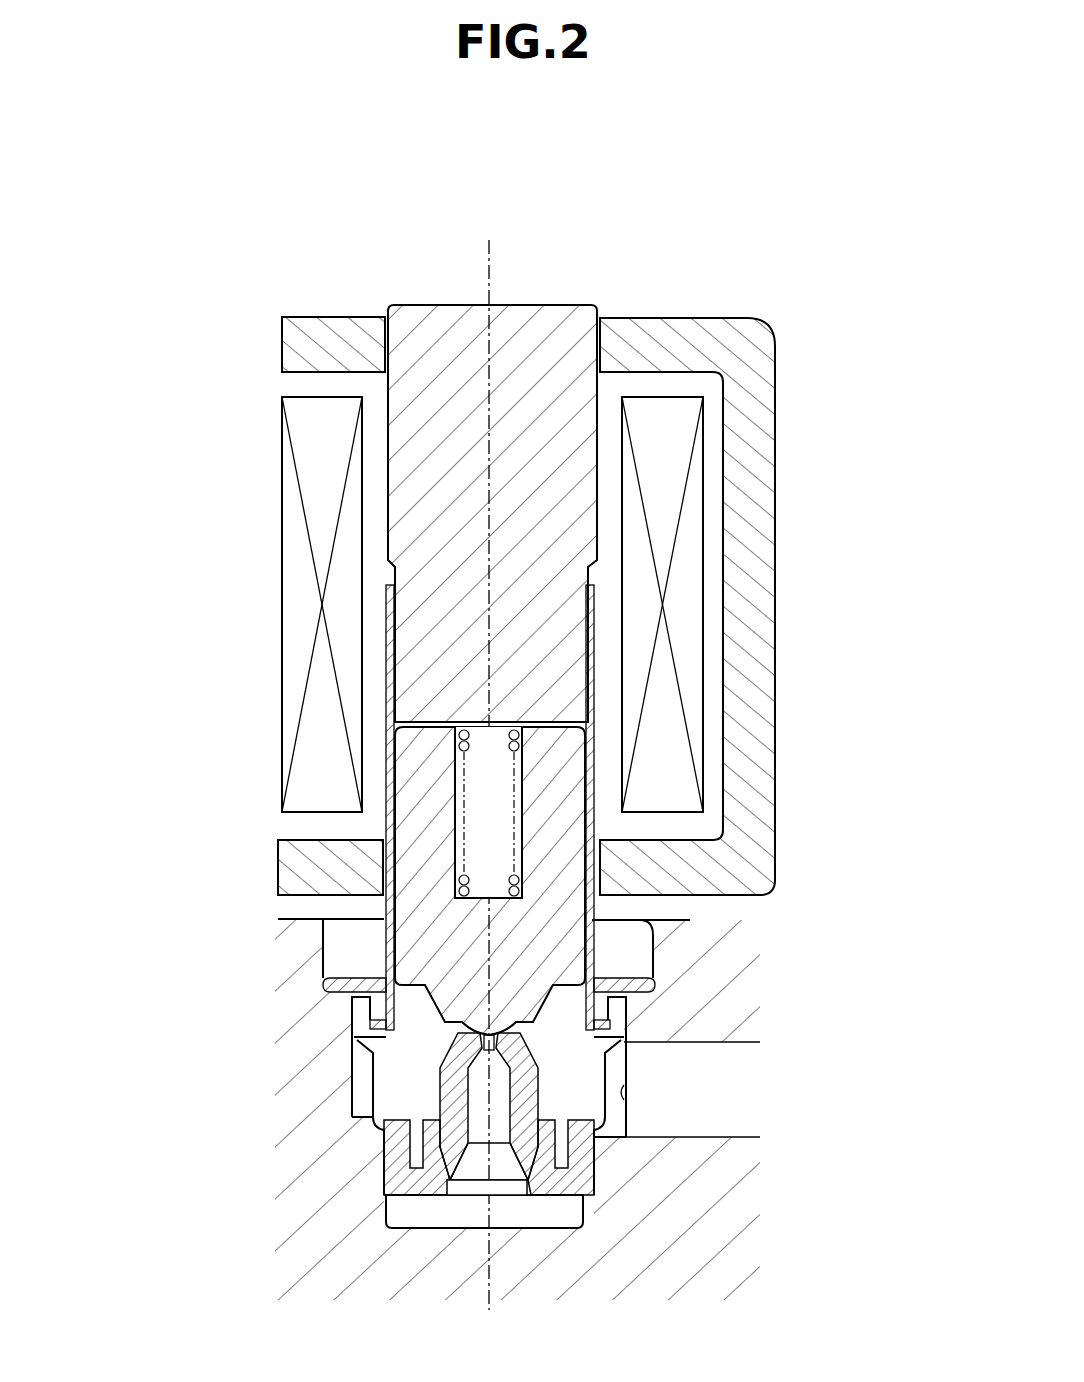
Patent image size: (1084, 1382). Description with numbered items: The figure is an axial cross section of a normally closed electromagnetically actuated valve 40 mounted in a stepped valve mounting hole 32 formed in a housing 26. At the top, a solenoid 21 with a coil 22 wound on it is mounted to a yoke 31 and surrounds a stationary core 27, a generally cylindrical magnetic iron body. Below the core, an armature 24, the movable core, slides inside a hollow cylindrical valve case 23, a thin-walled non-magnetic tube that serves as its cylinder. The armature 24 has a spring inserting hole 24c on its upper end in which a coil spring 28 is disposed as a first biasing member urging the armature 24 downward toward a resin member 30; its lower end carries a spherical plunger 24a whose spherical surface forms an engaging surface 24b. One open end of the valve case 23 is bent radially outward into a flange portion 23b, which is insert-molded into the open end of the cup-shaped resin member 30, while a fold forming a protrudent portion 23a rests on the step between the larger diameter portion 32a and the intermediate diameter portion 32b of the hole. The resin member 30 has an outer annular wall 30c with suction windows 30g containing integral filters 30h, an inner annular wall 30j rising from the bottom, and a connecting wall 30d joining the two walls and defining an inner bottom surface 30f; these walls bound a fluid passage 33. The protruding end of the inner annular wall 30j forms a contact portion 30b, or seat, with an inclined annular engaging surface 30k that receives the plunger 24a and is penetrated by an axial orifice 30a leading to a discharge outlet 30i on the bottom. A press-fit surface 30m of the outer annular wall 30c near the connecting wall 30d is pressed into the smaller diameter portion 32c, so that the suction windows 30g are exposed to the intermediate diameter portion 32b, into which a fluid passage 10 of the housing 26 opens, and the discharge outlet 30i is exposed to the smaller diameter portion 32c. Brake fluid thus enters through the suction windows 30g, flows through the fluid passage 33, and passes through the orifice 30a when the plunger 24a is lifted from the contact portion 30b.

The fluid passage 10 is at (690, 1130).
The solenoid 21 is at (565, 524).
The coil 22 is at (668, 480).
The valve case 23 is at (597, 667).
The protrudent portion 23a is at (622, 988).
The flange portion 23b is at (620, 1025).
The armature 24 is at (504, 894).
The plunger 24a is at (640, 928).
The engaging surface 24b is at (458, 1040).
The spring inserting hole 24c is at (465, 820).
The housing 26 is at (660, 1232).
The stationary core 27 is at (542, 304).
The coil spring 28 is at (520, 845).
The resin member 30 is at (526, 1124).
The orifice 30a is at (640, 1062).
The contact portion 30b is at (382, 1022).
The outer annular wall 30c is at (350, 998).
The connecting wall 30d is at (430, 1232).
The inner bottom surface 30f is at (392, 1207).
The suction window 30g is at (420, 1102).
The filter 30h is at (385, 1097).
The discharge outlet 30i is at (505, 1228).
The inner annular wall 30j is at (460, 1125).
The engaging surface 30k is at (352, 947).
The press-fit surface 30m is at (597, 1205).
The yoke 31 is at (745, 353).
The valve mounting hole 32 is at (615, 893).
The larger diameter portion 32a is at (616, 936).
The intermediate diameter portion 32b is at (628, 1098).
The smaller diameter portion 32c is at (575, 1188).
The fluid passage 33 is at (400, 1157).
The electromagnetically actuated valve 40 is at (575, 537).